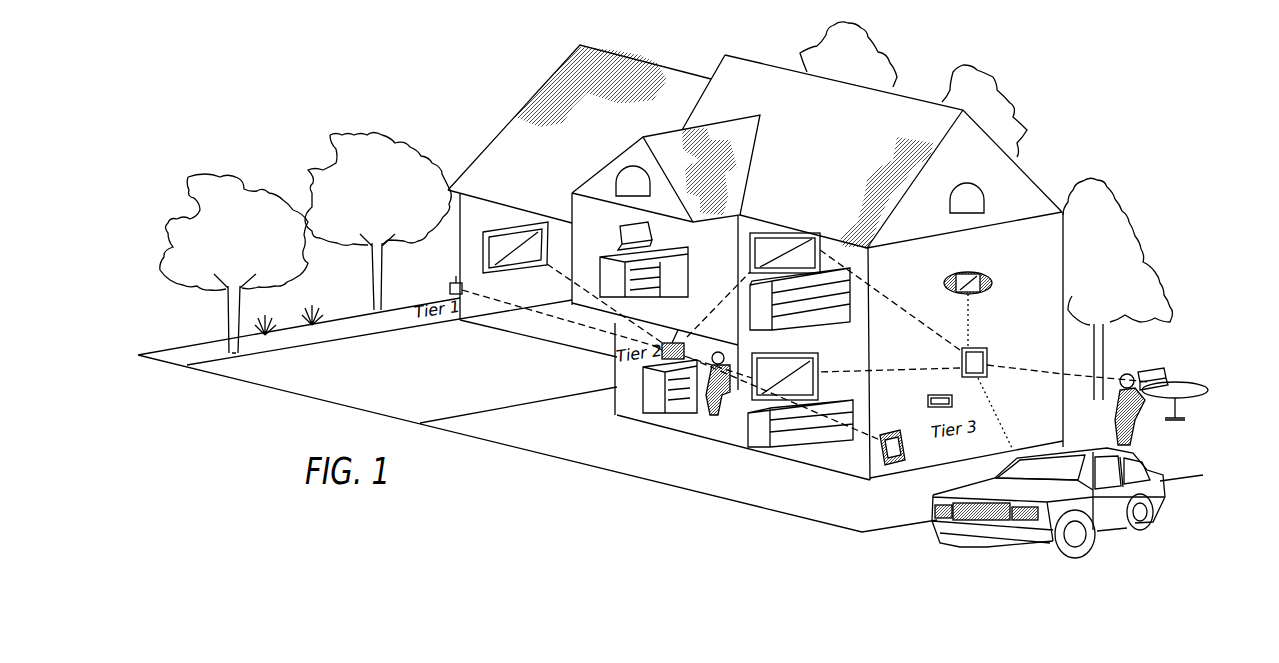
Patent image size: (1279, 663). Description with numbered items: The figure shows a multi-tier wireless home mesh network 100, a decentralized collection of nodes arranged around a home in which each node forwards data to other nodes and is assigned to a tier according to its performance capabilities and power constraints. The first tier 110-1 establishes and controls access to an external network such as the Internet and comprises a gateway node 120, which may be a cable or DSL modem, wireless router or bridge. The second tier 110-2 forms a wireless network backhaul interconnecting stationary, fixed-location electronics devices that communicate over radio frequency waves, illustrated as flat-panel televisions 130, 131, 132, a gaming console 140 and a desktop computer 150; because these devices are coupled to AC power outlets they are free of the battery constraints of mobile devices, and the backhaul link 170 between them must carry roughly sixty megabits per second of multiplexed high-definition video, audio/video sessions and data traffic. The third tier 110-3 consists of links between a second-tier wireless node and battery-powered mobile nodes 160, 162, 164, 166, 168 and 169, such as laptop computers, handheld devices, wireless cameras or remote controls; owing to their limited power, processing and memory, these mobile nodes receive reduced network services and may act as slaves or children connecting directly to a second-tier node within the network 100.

The multi-tier wireless home mesh network 100 is at (1078, 86).
The first tier 110-1 is at (415, 322).
The second tier 110-2 is at (630, 367).
The third tier 110-3 is at (943, 447).
The gateway node 120 is at (452, 290).
The flat-panel television 130 is at (503, 232).
The flat-panel television 131 is at (762, 233).
The flat-panel television 132 is at (752, 398).
The gaming console 140 is at (980, 348).
The desktop computer 150 is at (672, 343).
The mobile node 160 is at (618, 250).
The mobile node 162 is at (900, 468).
The mobile node 164 is at (980, 278).
The mobile node 166 is at (1162, 378).
The mobile node 168 is at (1040, 450).
The mobile node 169 is at (940, 395).
The backhaul link 170 is at (550, 316).